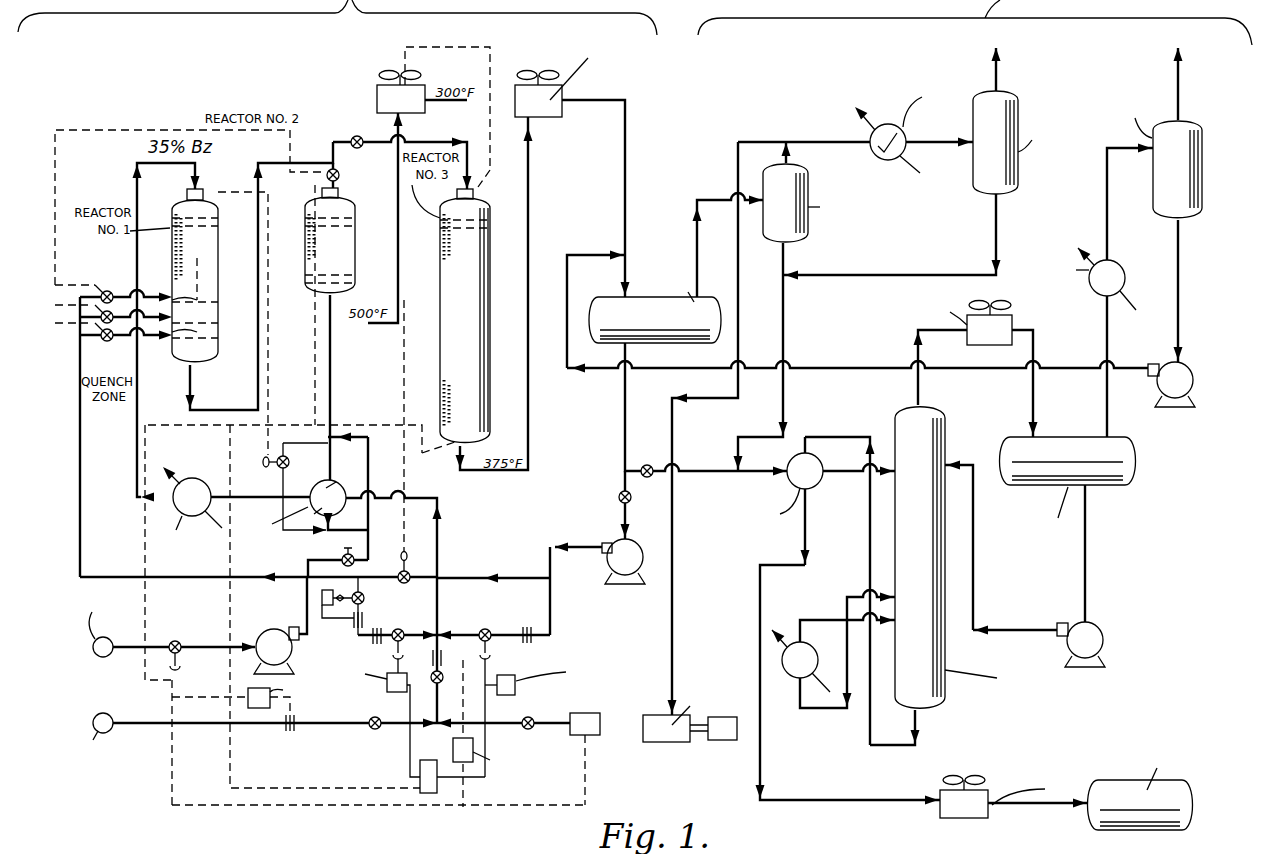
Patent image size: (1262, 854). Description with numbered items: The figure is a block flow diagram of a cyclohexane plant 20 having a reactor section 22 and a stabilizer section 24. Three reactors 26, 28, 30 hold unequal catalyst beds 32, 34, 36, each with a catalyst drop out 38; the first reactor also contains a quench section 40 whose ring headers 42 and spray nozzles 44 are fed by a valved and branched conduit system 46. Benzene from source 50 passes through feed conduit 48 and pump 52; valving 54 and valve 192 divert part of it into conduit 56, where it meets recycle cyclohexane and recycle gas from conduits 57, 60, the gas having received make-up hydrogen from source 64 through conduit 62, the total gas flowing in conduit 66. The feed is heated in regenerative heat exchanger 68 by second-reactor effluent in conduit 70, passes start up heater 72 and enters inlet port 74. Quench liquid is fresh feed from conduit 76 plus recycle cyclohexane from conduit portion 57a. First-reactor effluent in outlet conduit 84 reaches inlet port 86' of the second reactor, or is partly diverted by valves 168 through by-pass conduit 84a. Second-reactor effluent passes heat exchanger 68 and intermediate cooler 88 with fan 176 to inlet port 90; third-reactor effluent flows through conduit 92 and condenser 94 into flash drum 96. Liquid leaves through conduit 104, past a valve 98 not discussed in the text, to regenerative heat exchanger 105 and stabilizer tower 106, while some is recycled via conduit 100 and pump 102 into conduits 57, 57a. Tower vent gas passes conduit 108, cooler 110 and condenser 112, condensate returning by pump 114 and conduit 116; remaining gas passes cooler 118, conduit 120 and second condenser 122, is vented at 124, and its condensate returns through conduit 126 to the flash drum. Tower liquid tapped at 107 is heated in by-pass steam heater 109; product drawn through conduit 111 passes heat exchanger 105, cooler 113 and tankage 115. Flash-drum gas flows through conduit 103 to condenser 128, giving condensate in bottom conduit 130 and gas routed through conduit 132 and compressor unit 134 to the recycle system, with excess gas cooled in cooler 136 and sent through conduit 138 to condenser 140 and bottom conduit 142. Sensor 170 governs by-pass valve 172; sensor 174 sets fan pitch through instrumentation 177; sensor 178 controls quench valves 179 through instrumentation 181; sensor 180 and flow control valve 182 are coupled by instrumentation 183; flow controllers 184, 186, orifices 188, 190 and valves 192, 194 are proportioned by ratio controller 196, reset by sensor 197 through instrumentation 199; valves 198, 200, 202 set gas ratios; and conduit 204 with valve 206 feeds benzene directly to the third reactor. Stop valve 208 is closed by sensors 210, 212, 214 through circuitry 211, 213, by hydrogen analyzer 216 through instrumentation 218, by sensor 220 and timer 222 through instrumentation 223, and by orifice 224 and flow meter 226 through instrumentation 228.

The cyclohexane plant 20 is at (750, 45).
The reactor section 22 is at (337, 17).
The stabilizer section 24 is at (975, 22).
The first reactor 26 is at (228, 207).
The second reactor 28 is at (365, 205).
The third reactor 30 is at (496, 198).
The catalyst bed 32 is at (172, 241).
The catalyst bed 34 is at (305, 233).
The catalyst bed 36 is at (440, 246).
The catalyst drop out 38 is at (233, 278).
The quench section 40 is at (218, 347).
The ring headers 42 is at (218, 323).
The spray nozzles 44 is at (170, 295).
The valved and branched conduit system 46 is at (100, 350).
The feed conduit 48 is at (194, 641).
The source of benzene 50 is at (109, 626).
The pump 52 is at (273, 629).
The valving 54 is at (365, 598).
The conduit 56 is at (135, 194).
The recycle cyclohexane conduit 57 is at (550, 575).
The conduit portion 57a is at (530, 578).
The recycle gas conduit 60 is at (549, 729).
The make-up hydrogen conduit 62 is at (308, 729).
The source of fresh hydrogen 64 is at (106, 713).
The conduit 66 is at (437, 716).
The regenerative heat exchanger 68 is at (336, 481).
The conduit 70 is at (399, 281).
The start up heater 72 is at (200, 479).
The inlet port 74 is at (187, 192).
The conduit 76 is at (289, 577).
The first reactor outlet conduit 84 is at (205, 408).
The by-pass conduit 84a is at (380, 128).
The inlet port 86' is at (350, 180).
The intermediate cooler 88 is at (377, 90).
The inlet port 90 is at (457, 194).
The conduit 92 is at (640, 155).
The condenser 94 is at (545, 98).
The high pressure flash drum 96 is at (645, 343).
The valve 98 is at (619, 468).
The conduit 100 is at (618, 500).
The pump 102 is at (605, 543).
The conduit 103 is at (695, 224).
The conduit 104 is at (625, 404).
The regenerative heat exchanger 105 is at (795, 485).
The stabilizer tower 106 is at (950, 691).
The tap 107 is at (878, 612).
The conduit 108 is at (1033, 388).
The by-pass steam heater 109 is at (803, 680).
The cooler 110 is at (1010, 320).
The conduit 111 is at (835, 800).
The condenser 112 is at (1050, 485).
The cooler 113 is at (982, 806).
The pump 114 is at (1098, 628).
The tankage 115 is at (1125, 790).
The conduit 116 is at (973, 547).
The cooler 118 is at (1114, 262).
The conduit 120 is at (1107, 183).
The second condenser 122 is at (1202, 153).
The vent 124 is at (1180, 100).
The conduit 126 is at (810, 369).
The condenser 128 is at (808, 180).
The bottom conduit 130 is at (784, 321).
The conduit 132 is at (739, 313).
The compressor unit 134 is at (657, 714).
The cooler 136 is at (887, 121).
The conduit 138 is at (943, 141).
The second condenser 140 is at (1018, 118).
The bottom conduit 142 is at (898, 275).
The valves 168 is at (351, 138).
The sensor 170 is at (203, 188).
The by-pass valve 172 is at (264, 469).
The temperature sensor 174 is at (491, 168).
The fan 176 is at (396, 70).
The instrumentation 177 is at (492, 48).
The sensor 178 is at (326, 177).
The valves 179 is at (110, 290).
The temperature sensor 180 is at (340, 305).
The instrumentation 181 is at (108, 129).
The flow control valve 182 is at (398, 573).
The instrumentation 183 is at (404, 401).
The flow controller 184 is at (387, 691).
The flow controller 186 is at (515, 687).
The orifice 188 is at (380, 631).
The orifice 190 is at (528, 628).
The valve 192 is at (401, 628).
The valve 194 is at (486, 628).
The ratio controller 196 is at (422, 794).
The temperature sensor 197 is at (205, 283).
The valve 198 is at (372, 731).
The instrumentation 199 is at (283, 788).
The valve 200 is at (529, 717).
The valve 202 is at (439, 684).
The conduit 204 is at (368, 547).
The valve 206 is at (338, 557).
The stop valve 208 is at (181, 658).
The temperature sensor 210 is at (185, 370).
The circuitry 211 is at (145, 548).
The temperature sensor 212 is at (315, 300).
The circuitry 213 is at (313, 398).
The sensor 214 is at (437, 461).
The hydrogen analyzer 216 is at (582, 714).
The instrumentation 218 is at (546, 808).
The sensor 220 is at (296, 717).
The timer 222 is at (285, 691).
The instrumentation 223 is at (210, 709).
The orifice 224 is at (442, 653).
The flow meter 226 is at (453, 749).
The instrumentation 228 is at (465, 792).